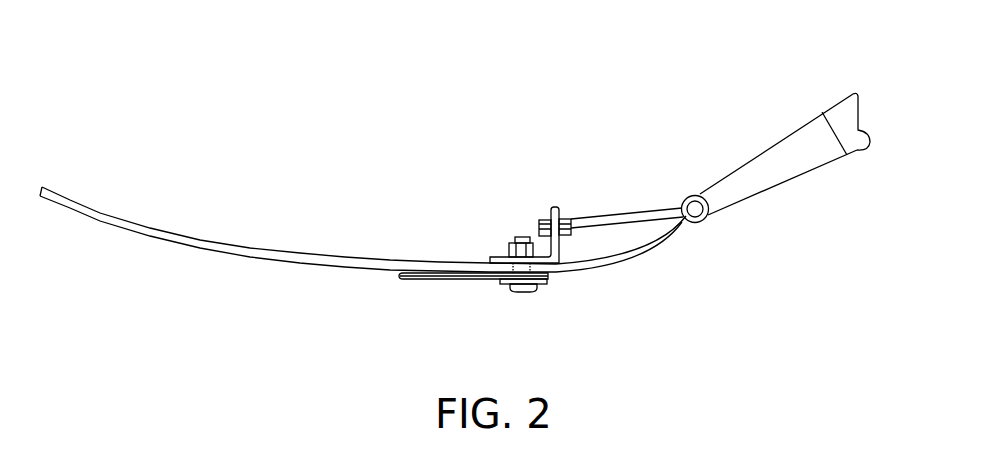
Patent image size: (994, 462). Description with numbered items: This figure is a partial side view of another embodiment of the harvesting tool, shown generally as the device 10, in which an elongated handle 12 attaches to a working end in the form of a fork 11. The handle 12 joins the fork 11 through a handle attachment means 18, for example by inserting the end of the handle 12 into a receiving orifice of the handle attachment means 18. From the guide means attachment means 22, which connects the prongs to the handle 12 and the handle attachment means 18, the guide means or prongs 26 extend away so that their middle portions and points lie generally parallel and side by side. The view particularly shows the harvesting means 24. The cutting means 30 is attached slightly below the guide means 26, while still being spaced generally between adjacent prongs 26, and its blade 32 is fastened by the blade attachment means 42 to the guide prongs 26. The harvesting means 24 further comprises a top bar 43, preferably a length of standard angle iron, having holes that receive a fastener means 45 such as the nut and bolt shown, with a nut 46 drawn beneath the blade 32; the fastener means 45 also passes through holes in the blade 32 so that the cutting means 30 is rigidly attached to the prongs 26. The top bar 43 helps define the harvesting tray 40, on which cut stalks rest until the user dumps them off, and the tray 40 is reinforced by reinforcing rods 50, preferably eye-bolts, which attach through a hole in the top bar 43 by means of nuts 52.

The blade assembly 10 is at (462, 72).
The fork 11 is at (717, 183).
The elongated handle 12 is at (842, 110).
The handle attachment means 18 is at (778, 175).
The guide means attachment means 22 is at (602, 270).
The harvesting means 24 is at (568, 135).
The guide means or prongs 26 is at (328, 252).
The cutting means 30 is at (425, 279).
The blade 32 is at (400, 275).
The harvesting tray 40 is at (510, 225).
The blade attachment means 42 is at (490, 238).
The top bar 43 is at (557, 207).
The fastener means 45 is at (517, 292).
The nut 46 is at (538, 292).
The reinforcing rods 50 is at (634, 217).
The nuts 52 is at (543, 220).